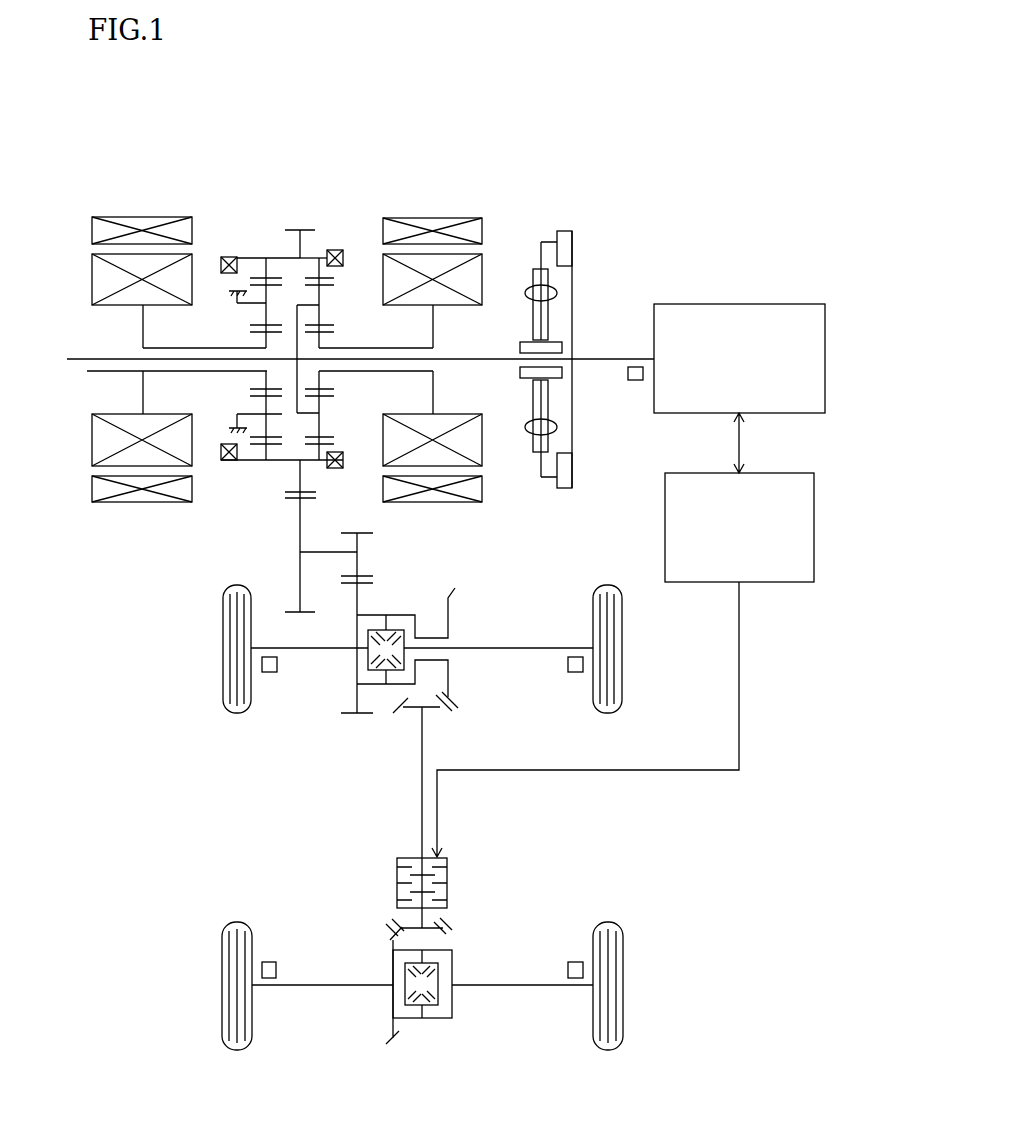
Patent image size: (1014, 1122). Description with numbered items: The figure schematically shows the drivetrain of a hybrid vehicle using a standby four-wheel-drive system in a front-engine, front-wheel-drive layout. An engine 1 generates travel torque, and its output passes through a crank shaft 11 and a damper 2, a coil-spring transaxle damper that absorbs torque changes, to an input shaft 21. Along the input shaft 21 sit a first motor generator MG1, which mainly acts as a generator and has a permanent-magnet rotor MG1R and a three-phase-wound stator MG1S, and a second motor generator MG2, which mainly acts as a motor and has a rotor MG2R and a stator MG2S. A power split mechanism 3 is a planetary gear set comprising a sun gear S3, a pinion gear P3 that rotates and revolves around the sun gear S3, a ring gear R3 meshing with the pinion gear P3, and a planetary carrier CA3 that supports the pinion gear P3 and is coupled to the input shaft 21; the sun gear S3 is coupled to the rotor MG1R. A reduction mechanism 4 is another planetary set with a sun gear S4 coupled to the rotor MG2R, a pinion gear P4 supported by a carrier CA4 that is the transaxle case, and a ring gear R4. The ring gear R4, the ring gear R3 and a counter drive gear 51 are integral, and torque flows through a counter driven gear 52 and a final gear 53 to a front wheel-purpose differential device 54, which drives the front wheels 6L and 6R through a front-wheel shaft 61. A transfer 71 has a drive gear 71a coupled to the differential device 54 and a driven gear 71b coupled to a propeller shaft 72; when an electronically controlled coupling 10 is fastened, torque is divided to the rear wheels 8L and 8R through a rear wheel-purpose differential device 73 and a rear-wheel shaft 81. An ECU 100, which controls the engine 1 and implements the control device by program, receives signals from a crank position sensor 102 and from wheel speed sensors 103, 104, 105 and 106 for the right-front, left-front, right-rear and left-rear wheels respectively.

The engine 1 is at (778, 302).
The damper 2 is at (591, 236).
The power split mechanism 3 is at (310, 334).
The reduction mechanism 4 is at (269, 347).
The electronically controlled coupling 10 is at (468, 872).
The crank shaft 11 is at (608, 356).
The input shaft 21 is at (473, 358).
The counter drive gear 51 is at (302, 473).
The counter driven gear 52 is at (298, 550).
The final gear 53 is at (358, 550).
The front wheel-purpose differential device 54 is at (412, 605).
The front-wheel shaft 61 is at (517, 647).
The left front wheel 6L is at (231, 585).
The right front wheel 6R is at (612, 585).
The transfer 71 is at (468, 714).
The drive gear 71a is at (450, 680).
The driven gear 71b is at (438, 708).
The propeller shaft 72 is at (420, 762).
The rear wheel-purpose differential device 73 is at (382, 952).
The rear-wheel shaft 81 is at (485, 985).
The left rear wheel 8L is at (237, 922).
The right rear wheel 8R is at (610, 922).
The ECU 100 is at (800, 585).
The crank position sensor 102 is at (636, 382).
The right-front wheel speed sensor 103 is at (576, 674).
The left-front wheel speed sensor 104 is at (270, 674).
The right-rear wheel speed sensor 105 is at (575, 960).
The left-rear wheel speed sensor 106 is at (268, 960).
The first motor generator MG1 is at (483, 313).
The stator of first motor generator MG1S is at (445, 217).
The rotor of first motor generator MG1R is at (482, 270).
The second motor generator MG2 is at (116, 323).
The stator of second motor generator MG2S is at (92, 228).
The rotor of second motor generator MG2R is at (92, 279).
The ring gear R3 is at (318, 255).
The sun gear S3 is at (334, 330).
The pinion gear P3 is at (330, 323).
The planetary carrier CA3 is at (290, 415).
The ring gear R4 is at (277, 257).
The sun gear S4 is at (252, 330).
The pinion gear P4 is at (253, 396).
The carrier CA4 is at (237, 416).